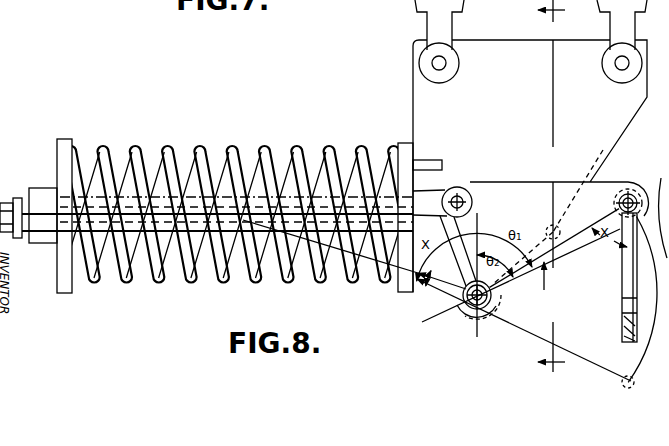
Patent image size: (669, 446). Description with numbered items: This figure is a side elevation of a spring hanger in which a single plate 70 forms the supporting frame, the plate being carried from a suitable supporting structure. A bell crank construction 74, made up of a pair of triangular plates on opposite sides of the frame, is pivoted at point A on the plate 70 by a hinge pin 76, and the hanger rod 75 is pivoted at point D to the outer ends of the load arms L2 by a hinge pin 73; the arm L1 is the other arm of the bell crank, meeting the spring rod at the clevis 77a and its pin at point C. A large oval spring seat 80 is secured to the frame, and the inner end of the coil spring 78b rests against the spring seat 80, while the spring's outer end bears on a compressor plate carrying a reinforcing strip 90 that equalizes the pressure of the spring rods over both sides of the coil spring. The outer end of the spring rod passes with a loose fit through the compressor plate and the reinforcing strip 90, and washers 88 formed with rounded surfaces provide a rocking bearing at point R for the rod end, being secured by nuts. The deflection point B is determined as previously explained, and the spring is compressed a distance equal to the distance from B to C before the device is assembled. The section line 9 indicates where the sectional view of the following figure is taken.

The plate 70 is at (533, 97).
The hinge pin 73 is at (631, 190).
The bell crank construction 74 is at (560, 262).
The hanger rod 75 is at (622, 287).
The hinge pin 76 is at (470, 287).
The clevis on spring rod 77a is at (471, 186).
The coil spring 78b is at (205, 150).
The spring seat 80 is at (402, 280).
The washers 88 is at (17, 200).
The reinforcing strip 90 is at (47, 241).
The section line 9 is at (551, 194).
The rocking bearing point R is at (33, 213).
The point C is at (460, 196).
The pivot point A is at (467, 318).
The pivot point D is at (656, 185).
The deflection point B is at (243, 224).
The moment arm L1 is at (412, 322).
The load arms L2 is at (540, 289).